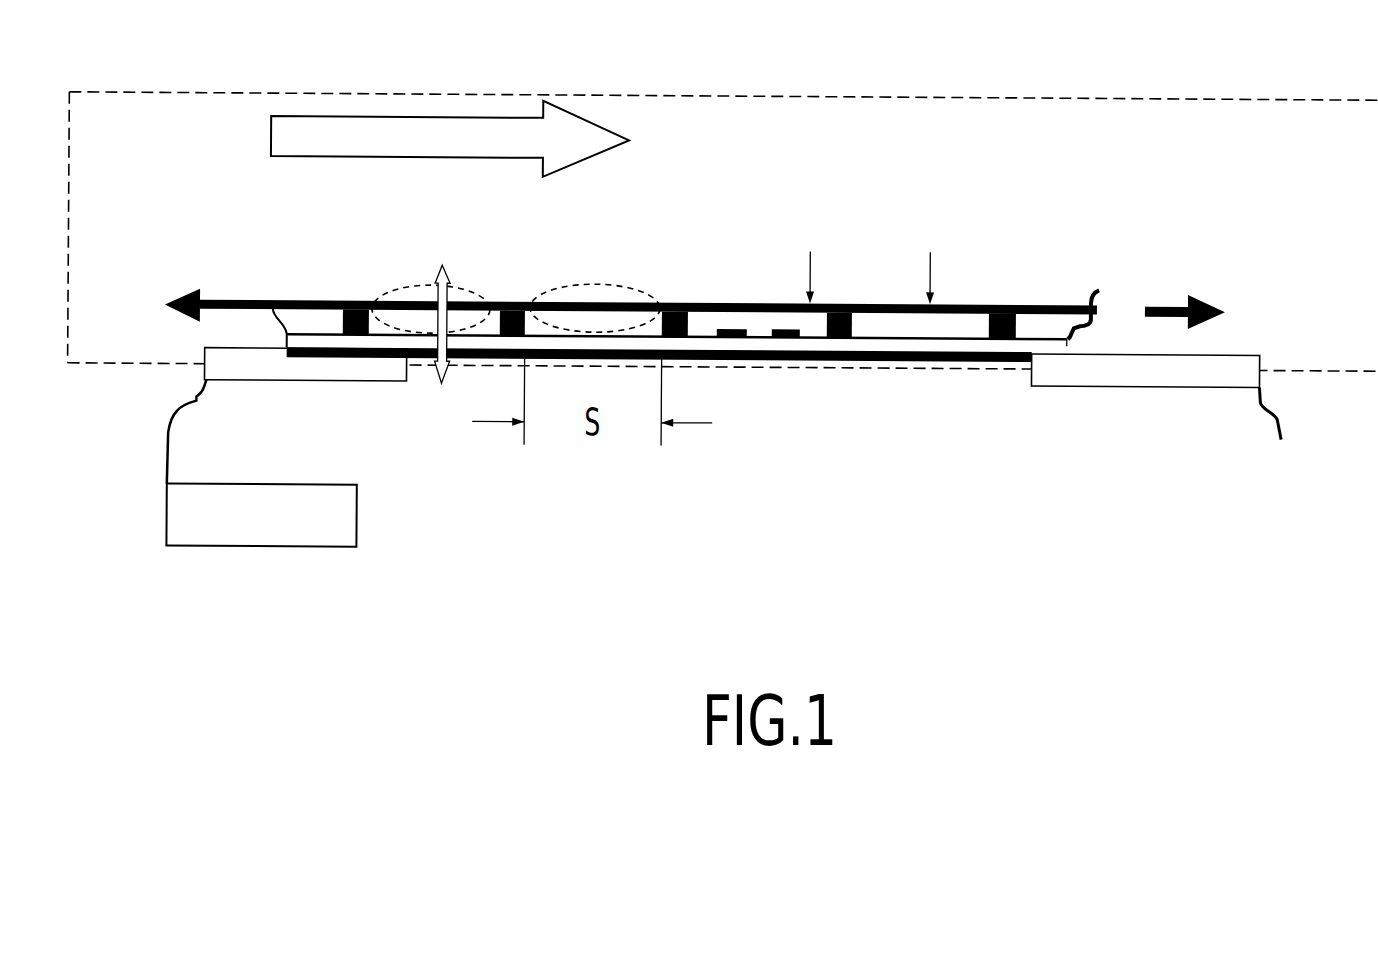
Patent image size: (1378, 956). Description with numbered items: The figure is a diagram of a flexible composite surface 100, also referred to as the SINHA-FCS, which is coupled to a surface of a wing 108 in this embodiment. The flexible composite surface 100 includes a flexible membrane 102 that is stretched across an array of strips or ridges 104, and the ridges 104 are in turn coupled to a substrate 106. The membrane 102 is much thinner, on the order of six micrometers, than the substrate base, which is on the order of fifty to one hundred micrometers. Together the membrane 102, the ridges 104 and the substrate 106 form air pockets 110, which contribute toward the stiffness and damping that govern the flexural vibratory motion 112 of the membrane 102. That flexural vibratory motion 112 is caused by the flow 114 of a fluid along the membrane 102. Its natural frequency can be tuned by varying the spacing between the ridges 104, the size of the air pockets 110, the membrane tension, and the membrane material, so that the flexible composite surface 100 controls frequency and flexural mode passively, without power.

The flexible composite surface 100 is at (1088, 92).
The flexible membrane 102 is at (272, 319).
The ridges 104 is at (987, 322).
The substrate 106 is at (1068, 340).
The wing 108 is at (168, 440).
The air pockets 110 is at (1040, 310).
The flexural vibratory motion 112 is at (477, 290).
The flow 114 is at (270, 133).